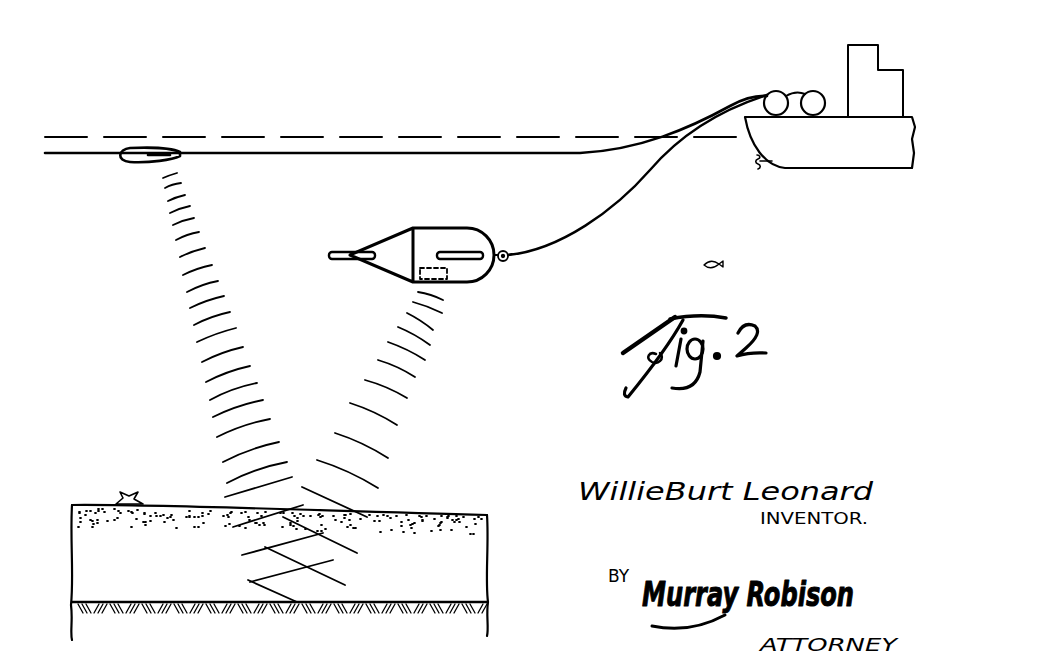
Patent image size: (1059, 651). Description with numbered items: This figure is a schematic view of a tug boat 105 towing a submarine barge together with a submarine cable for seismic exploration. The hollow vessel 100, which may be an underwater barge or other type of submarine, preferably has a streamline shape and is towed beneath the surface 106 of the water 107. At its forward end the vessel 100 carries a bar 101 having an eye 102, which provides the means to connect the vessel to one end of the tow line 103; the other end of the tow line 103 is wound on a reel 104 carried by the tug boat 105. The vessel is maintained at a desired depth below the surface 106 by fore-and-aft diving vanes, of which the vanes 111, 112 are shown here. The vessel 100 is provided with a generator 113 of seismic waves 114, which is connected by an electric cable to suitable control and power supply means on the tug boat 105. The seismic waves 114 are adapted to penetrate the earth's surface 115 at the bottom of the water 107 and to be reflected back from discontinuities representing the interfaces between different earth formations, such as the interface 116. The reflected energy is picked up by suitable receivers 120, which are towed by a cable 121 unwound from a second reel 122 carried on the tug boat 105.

The hollow vessel 100 is at (428, 228).
The bar 101 is at (504, 263).
The eye 102 is at (509, 260).
The tow line 103 is at (633, 197).
The reel 104 is at (774, 91).
The tug boat 105 is at (873, 150).
The surface of water 106 is at (531, 137).
The water 107 is at (311, 388).
The diving vane 111 is at (467, 252).
The diving vane 112 is at (352, 262).
The generator of seismic waves 113 is at (437, 283).
The seismic waves 114 is at (392, 398).
The earth's surface 115 is at (445, 510).
The interface 116 is at (436, 602).
The receivers 120 is at (150, 148).
The cable 121 is at (411, 152).
The reel 122 is at (813, 91).